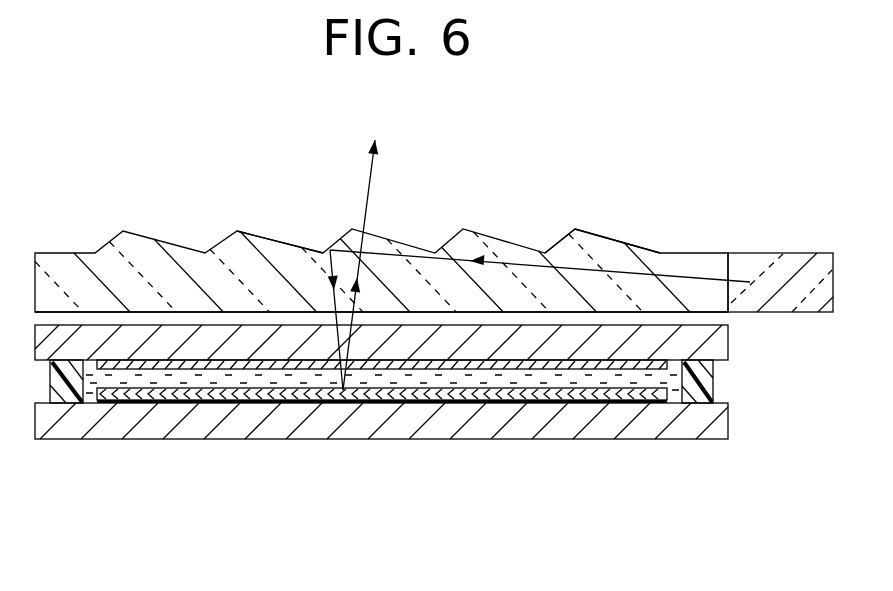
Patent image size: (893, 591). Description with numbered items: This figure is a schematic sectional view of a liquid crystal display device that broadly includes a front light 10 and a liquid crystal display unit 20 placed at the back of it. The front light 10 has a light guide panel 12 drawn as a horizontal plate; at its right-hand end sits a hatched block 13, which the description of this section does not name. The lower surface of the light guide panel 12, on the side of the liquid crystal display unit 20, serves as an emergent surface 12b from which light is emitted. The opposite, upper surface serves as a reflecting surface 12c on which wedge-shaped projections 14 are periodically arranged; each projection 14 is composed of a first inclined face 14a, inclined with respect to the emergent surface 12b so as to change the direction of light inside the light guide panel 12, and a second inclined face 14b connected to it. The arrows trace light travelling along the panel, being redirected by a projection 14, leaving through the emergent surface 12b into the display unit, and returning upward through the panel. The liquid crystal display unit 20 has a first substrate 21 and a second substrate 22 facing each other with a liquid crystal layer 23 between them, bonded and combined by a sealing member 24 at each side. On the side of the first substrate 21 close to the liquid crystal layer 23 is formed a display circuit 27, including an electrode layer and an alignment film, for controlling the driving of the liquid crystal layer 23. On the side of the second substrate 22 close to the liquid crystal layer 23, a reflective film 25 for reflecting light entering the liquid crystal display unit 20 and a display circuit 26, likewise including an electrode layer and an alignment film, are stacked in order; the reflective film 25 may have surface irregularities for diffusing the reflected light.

The front light 10 is at (80, 240).
The light guide panel 12 is at (703, 257).
The emergent surface 12b is at (410, 314).
The reflecting surface 12c is at (278, 240).
The light source 13 is at (790, 262).
The projections 14 is at (652, 150).
The first inclined face 14a is at (548, 250).
The second inclined face 14b is at (640, 254).
The liquid crystal display unit 20 is at (593, 454).
The first substrate 21 is at (718, 343).
The second substrate 22 is at (718, 420).
The liquid crystal layer 23 is at (668, 370).
The sealing member 24 is at (713, 393).
The reflective film 25 is at (301, 403).
The display circuit 26 is at (237, 399).
The display circuit 27 is at (183, 374).